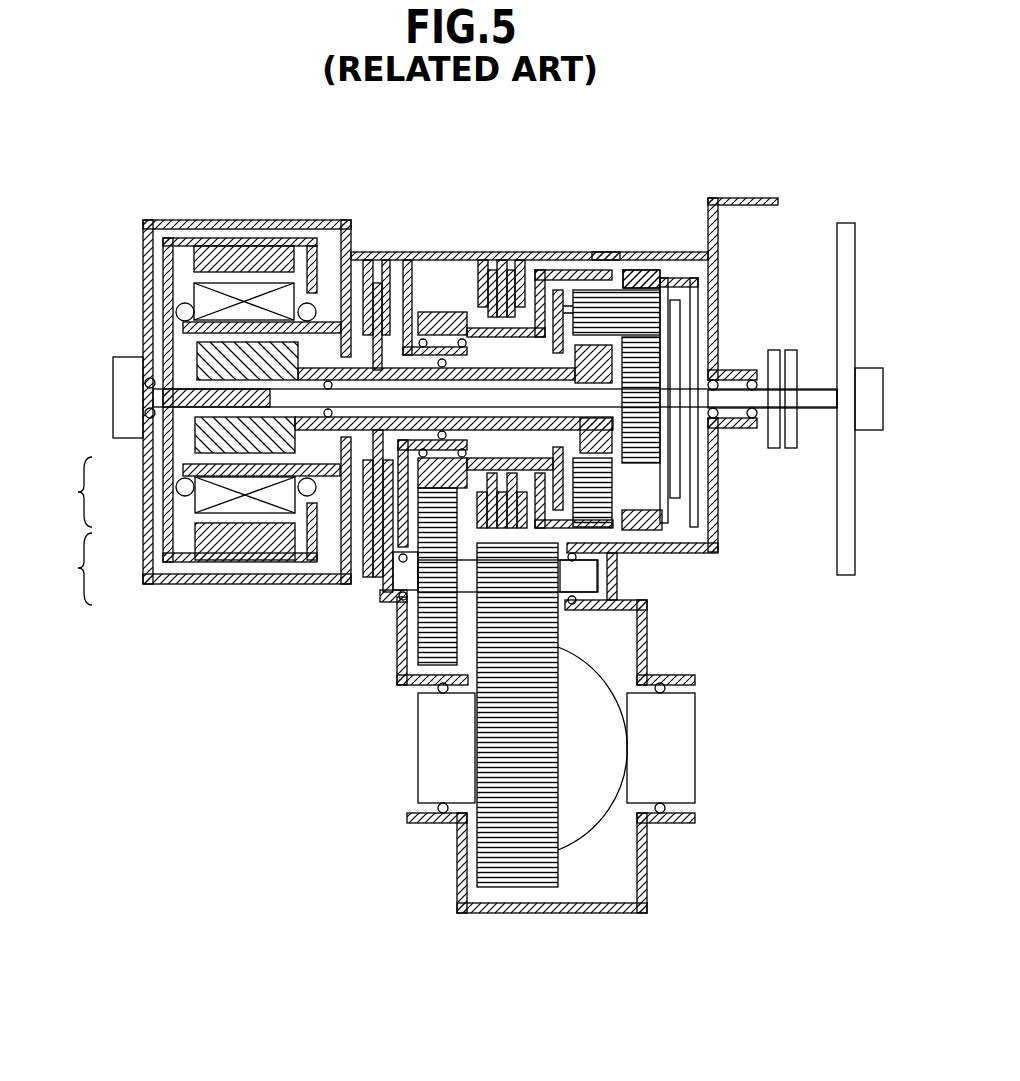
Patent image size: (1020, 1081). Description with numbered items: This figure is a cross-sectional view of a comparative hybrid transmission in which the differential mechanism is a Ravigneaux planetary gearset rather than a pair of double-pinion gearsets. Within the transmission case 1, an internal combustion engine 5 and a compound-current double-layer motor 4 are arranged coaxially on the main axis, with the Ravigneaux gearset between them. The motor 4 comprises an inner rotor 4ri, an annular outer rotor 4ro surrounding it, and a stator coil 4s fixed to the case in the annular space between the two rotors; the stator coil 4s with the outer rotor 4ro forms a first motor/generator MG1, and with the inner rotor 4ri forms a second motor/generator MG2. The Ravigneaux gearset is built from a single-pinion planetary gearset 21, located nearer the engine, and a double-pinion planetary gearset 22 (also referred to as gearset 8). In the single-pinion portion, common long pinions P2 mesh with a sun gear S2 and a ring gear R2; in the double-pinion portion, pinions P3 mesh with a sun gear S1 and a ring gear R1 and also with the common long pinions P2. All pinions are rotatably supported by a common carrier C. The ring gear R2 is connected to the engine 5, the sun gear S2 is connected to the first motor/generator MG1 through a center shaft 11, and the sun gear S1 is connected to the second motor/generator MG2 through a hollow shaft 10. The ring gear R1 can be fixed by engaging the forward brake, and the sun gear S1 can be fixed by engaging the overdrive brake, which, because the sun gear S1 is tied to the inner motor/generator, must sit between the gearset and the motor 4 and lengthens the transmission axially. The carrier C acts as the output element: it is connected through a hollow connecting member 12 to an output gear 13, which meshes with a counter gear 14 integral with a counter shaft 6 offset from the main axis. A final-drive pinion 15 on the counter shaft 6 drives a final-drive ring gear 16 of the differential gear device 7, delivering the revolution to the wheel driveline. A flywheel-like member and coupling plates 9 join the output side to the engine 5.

The compound-current double-layer motor 4 is at (270, 236).
The outer rotor 4ro is at (207, 540).
The stator coil 4s is at (210, 492).
The inner rotor 4ri is at (210, 440).
The first motor/generator MG1 is at (60, 569).
The second motor/generator MG2 is at (60, 492).
The center shaft 11 is at (346, 408).
The hollow shaft 10 is at (349, 432).
The transmission case 1 is at (413, 254).
The output gear 13 is at (440, 320).
The hollow connecting member 12 is at (471, 328).
The ring gear R1 is at (600, 266).
The carrier C is at (557, 290).
The double-pinion planetary gearset 22 is at (606, 262).
The single-pinion planetary gearset 21 is at (641, 262).
The ring gear R2 is at (648, 284).
The common long pinions P2 is at (638, 302).
The sun gear S2 is at (650, 410).
The sun gear S1 is at (587, 440).
The pinions P3 is at (596, 490).
The double-pinion planetary gearset 8 is at (725, 398).
The coupling plates 9 is at (790, 392).
The internal combustion engine 5 is at (870, 385).
The final-drive pinion 15 is at (600, 570).
The counter shaft 6 is at (575, 585).
The counter gear 14 is at (442, 627).
The final-drive ring gear 16 is at (548, 638).
The differential gear device 7 is at (612, 662).